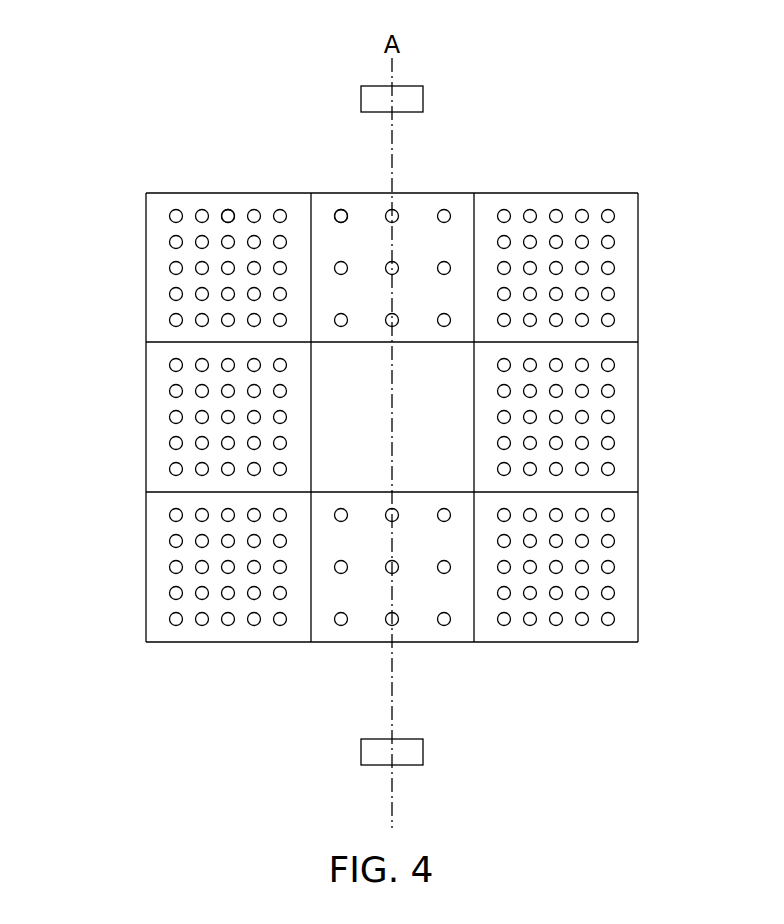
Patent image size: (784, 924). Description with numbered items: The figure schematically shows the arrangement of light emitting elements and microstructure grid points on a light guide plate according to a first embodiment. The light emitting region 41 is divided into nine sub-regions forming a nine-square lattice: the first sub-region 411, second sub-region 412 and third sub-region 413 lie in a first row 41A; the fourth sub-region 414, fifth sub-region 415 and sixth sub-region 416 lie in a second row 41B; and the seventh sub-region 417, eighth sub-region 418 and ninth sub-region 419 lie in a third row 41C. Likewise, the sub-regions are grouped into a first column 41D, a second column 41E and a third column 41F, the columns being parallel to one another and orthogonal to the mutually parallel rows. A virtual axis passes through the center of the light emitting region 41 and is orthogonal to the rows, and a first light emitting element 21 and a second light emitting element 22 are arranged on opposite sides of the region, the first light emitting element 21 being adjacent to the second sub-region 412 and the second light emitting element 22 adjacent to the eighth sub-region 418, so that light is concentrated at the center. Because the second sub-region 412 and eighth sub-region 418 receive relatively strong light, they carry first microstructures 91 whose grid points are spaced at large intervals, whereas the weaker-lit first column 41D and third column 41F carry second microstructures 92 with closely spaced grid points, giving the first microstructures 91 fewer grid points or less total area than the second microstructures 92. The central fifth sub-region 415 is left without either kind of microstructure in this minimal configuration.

The light emitting region 41 is at (139, 192).
The first row 41A is at (134, 252).
The second row 41B is at (134, 401).
The third row 41C is at (134, 551).
The first column 41D is at (233, 645).
The second column 41E is at (431, 645).
The third column 41F is at (550, 645).
The first sub-region 411 is at (162, 292).
The second sub-region 412 is at (428, 208).
The third sub-region 413 is at (626, 267).
The fourth sub-region 414 is at (162, 440).
The fifth sub-region 415 is at (352, 372).
The sixth sub-region 416 is at (626, 418).
The seventh sub-region 417 is at (162, 590).
The eighth sub-region 418 is at (335, 628).
The ninth sub-region 419 is at (626, 566).
The first microstructures 91 is at (341, 208).
The second microstructures 92 is at (228, 208).
The first light emitting element 21 is at (423, 98).
The second light emitting element 22 is at (423, 751).